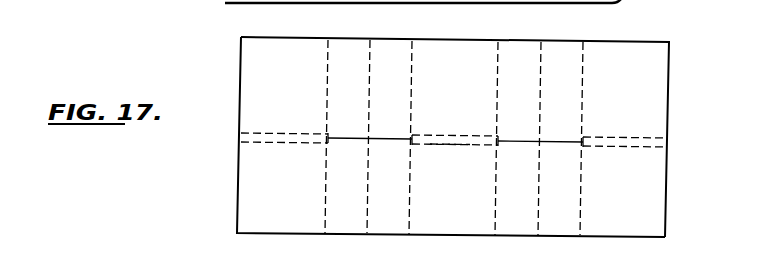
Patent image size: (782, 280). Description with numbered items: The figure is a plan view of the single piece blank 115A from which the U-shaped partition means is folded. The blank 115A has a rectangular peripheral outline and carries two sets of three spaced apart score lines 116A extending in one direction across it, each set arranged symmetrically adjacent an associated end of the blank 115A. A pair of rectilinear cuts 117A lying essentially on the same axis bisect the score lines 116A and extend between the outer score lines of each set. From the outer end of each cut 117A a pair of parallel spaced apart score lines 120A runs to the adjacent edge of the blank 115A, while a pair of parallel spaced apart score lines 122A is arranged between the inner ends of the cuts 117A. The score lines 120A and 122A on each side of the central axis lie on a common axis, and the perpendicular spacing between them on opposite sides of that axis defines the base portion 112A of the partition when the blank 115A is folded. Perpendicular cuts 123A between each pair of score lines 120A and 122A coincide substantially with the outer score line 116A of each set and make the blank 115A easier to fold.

The base portion 112A is at (284, 131).
The blank 115A is at (708, 67).
The score lines 116A is at (328, 56).
The cuts 117A is at (345, 141).
The score lines 120A is at (205, 147).
The score lines 122A is at (453, 117).
The perpendicular cut means 123A is at (329, 138).